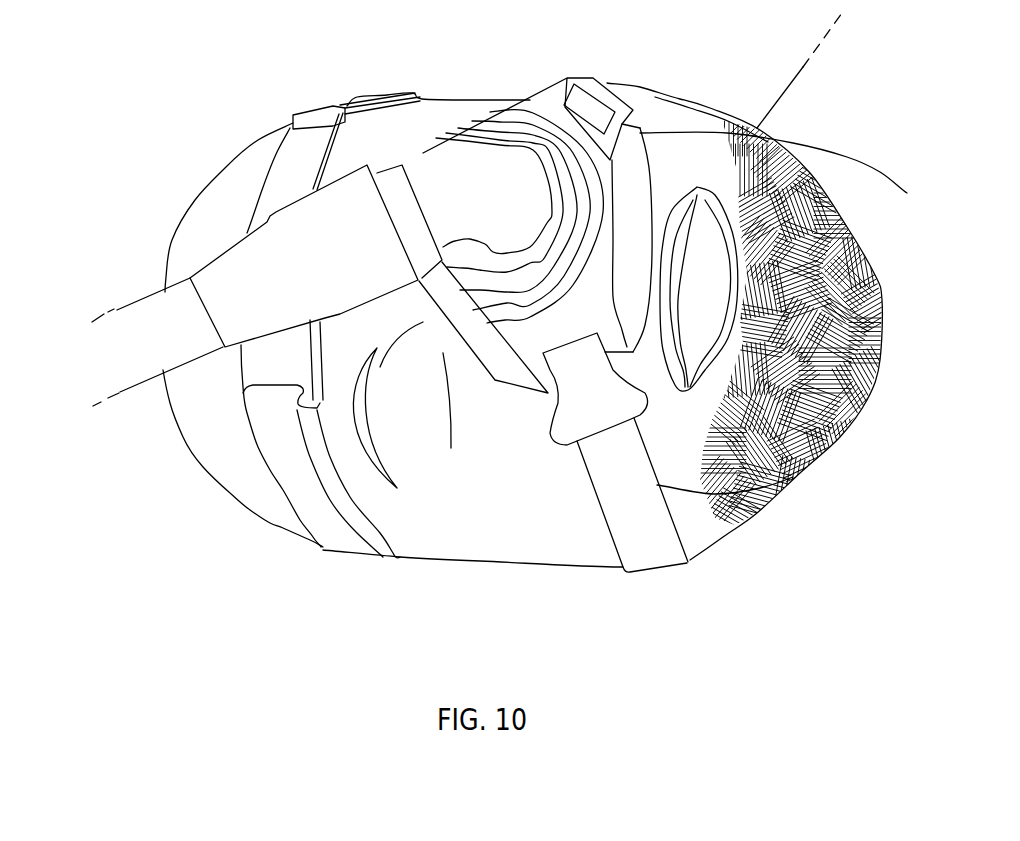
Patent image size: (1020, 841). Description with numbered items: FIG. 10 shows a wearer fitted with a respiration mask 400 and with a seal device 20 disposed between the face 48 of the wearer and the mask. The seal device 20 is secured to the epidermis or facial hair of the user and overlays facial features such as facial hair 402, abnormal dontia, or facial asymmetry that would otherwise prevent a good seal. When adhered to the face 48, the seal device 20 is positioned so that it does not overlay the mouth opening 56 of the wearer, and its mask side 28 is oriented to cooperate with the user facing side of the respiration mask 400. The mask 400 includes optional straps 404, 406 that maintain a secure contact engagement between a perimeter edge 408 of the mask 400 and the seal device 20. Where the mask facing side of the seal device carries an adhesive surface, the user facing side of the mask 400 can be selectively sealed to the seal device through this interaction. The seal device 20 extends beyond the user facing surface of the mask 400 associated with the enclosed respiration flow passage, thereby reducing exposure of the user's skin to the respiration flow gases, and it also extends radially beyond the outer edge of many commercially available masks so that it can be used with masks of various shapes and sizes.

The seal device 20 is at (673, 143).
The mask side 28 is at (686, 437).
The face 48 is at (450, 530).
The mouth opening 56 is at (690, 213).
The respiration mask 400 is at (470, 160).
The facial hair 402 is at (737, 123).
The strap 404 is at (627, 93).
The strap 406 is at (310, 118).
The perimeter edge 408 is at (492, 383).